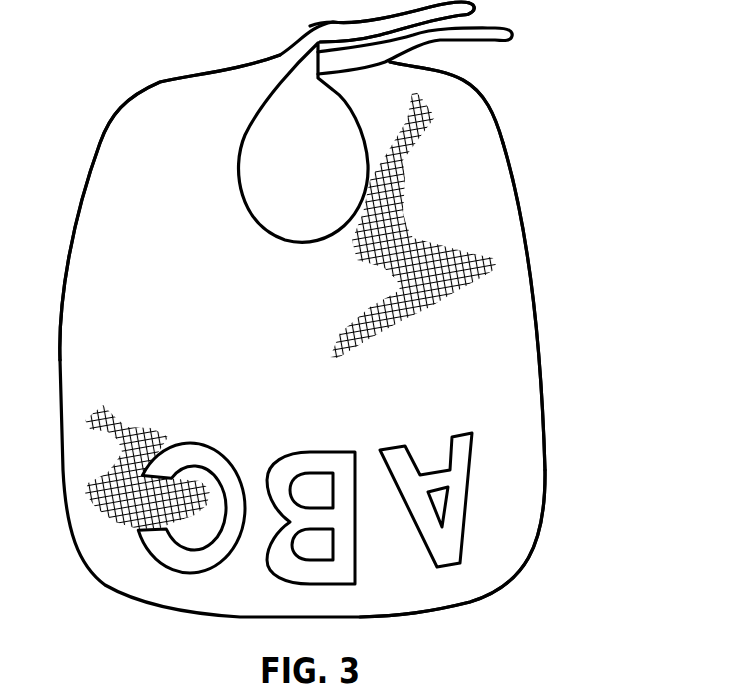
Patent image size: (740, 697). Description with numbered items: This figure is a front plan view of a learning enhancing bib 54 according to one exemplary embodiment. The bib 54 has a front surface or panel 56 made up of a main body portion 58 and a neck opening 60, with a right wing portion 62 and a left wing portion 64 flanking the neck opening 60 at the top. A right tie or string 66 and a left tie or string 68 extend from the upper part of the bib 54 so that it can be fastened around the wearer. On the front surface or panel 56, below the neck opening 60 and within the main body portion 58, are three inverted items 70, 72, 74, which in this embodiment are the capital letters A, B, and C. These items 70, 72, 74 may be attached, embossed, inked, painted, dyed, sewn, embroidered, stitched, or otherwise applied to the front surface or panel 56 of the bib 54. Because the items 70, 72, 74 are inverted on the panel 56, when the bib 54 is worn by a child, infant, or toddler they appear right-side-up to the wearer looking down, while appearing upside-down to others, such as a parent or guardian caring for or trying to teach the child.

The learning enhancing bib 54 is at (557, 257).
The front surface or panel 56 is at (527, 337).
The main body portion 58 is at (527, 493).
The neck opening 60 is at (235, 160).
The right wing portion 62 is at (497, 182).
The left wing portion 64 is at (147, 113).
The right tie or string 66 is at (492, 42).
The left tie or string 68 is at (316, 18).
The inverted item 70 is at (400, 443).
The inverted item 72 is at (317, 450).
The inverted item 74 is at (193, 440).